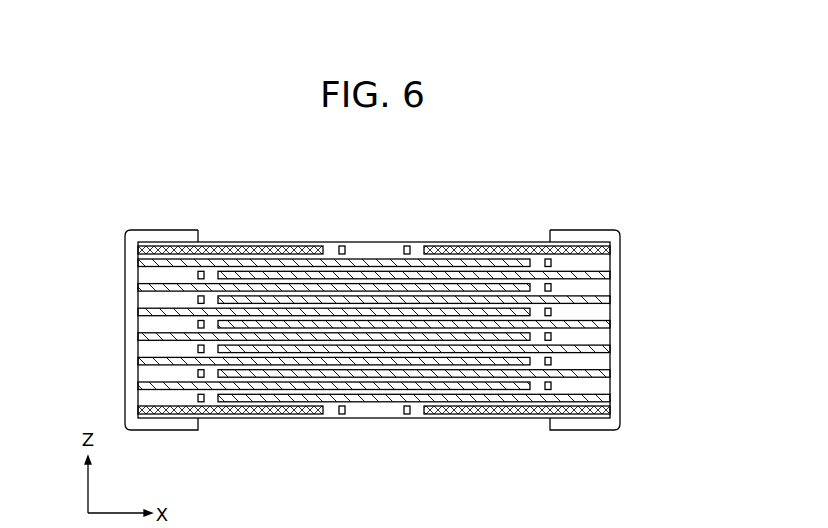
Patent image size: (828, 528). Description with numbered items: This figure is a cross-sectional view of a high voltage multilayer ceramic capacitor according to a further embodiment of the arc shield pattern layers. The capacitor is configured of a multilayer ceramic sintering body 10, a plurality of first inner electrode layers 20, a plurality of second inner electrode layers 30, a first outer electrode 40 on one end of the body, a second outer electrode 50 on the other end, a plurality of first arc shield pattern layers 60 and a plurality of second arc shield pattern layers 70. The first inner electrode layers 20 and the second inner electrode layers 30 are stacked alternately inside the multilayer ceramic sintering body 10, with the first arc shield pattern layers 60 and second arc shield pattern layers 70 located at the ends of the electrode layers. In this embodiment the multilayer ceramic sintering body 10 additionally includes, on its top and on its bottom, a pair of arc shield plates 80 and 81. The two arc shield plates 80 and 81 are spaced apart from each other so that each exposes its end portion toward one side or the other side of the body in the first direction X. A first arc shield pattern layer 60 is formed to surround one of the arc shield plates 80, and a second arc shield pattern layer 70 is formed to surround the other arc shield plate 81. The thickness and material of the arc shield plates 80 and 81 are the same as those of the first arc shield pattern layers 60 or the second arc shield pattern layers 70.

The multilayer ceramic sintering body 10 is at (140, 349).
The first inner electrode layers 20 is at (140, 262).
The second inner electrode layers 30 is at (600, 275).
The first outer electrode 40 is at (139, 232).
The second outer electrode 50 is at (572, 232).
The first arc shield pattern layers 60 is at (342, 246).
The second arc shield pattern layers 70 is at (407, 246).
The arc shield plate 80 is at (272, 246).
The arc shield plate 81 is at (450, 246).